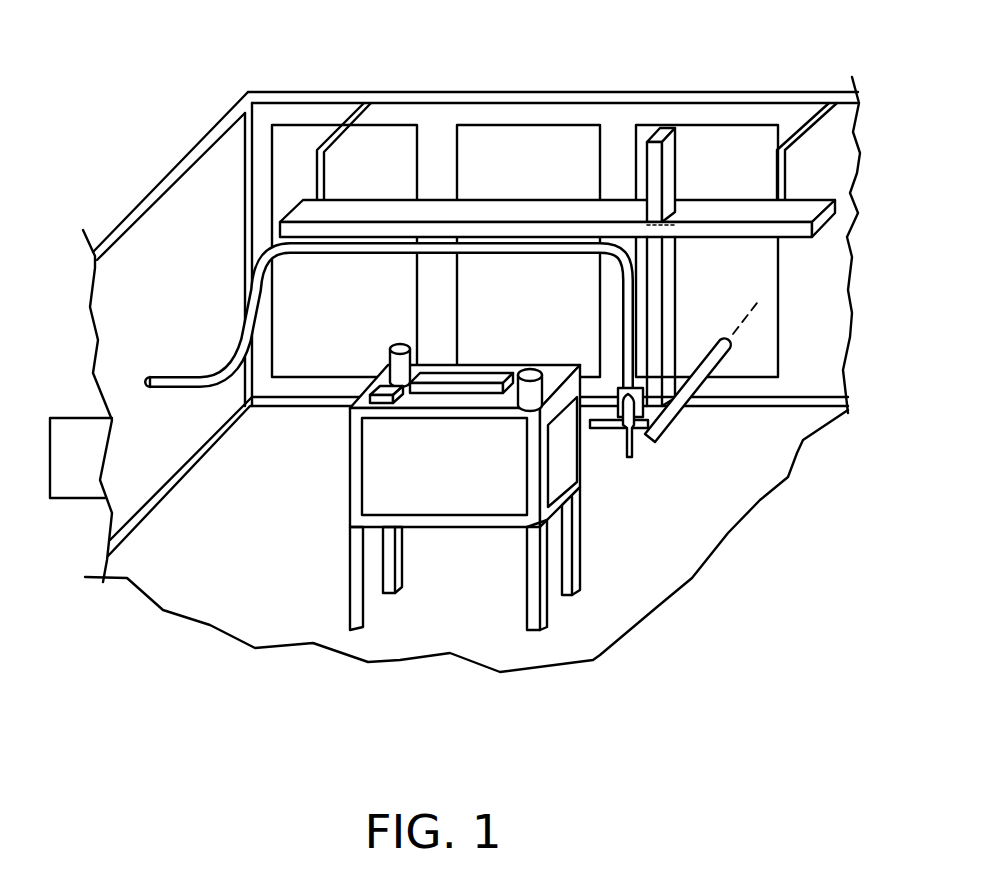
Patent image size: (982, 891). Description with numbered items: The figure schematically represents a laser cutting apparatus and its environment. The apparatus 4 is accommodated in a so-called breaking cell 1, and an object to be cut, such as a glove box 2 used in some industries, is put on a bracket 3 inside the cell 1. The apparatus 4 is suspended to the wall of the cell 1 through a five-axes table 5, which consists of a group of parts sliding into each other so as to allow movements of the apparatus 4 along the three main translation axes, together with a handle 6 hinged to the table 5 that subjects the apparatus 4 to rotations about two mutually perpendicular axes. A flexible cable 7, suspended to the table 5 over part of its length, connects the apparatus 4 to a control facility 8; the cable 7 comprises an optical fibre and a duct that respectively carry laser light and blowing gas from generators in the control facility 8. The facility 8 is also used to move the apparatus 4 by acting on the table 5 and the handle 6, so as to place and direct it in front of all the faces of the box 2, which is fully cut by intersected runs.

The breaking cell 1 is at (505, 82).
The box 2 is at (335, 460).
The bracket 3 is at (345, 583).
The laser cutting apparatus 4 is at (603, 438).
The 5-axes table 5 is at (687, 250).
The handle 6 is at (685, 428).
The flexible cable 7 is at (365, 250).
The control facility 8 is at (82, 441).